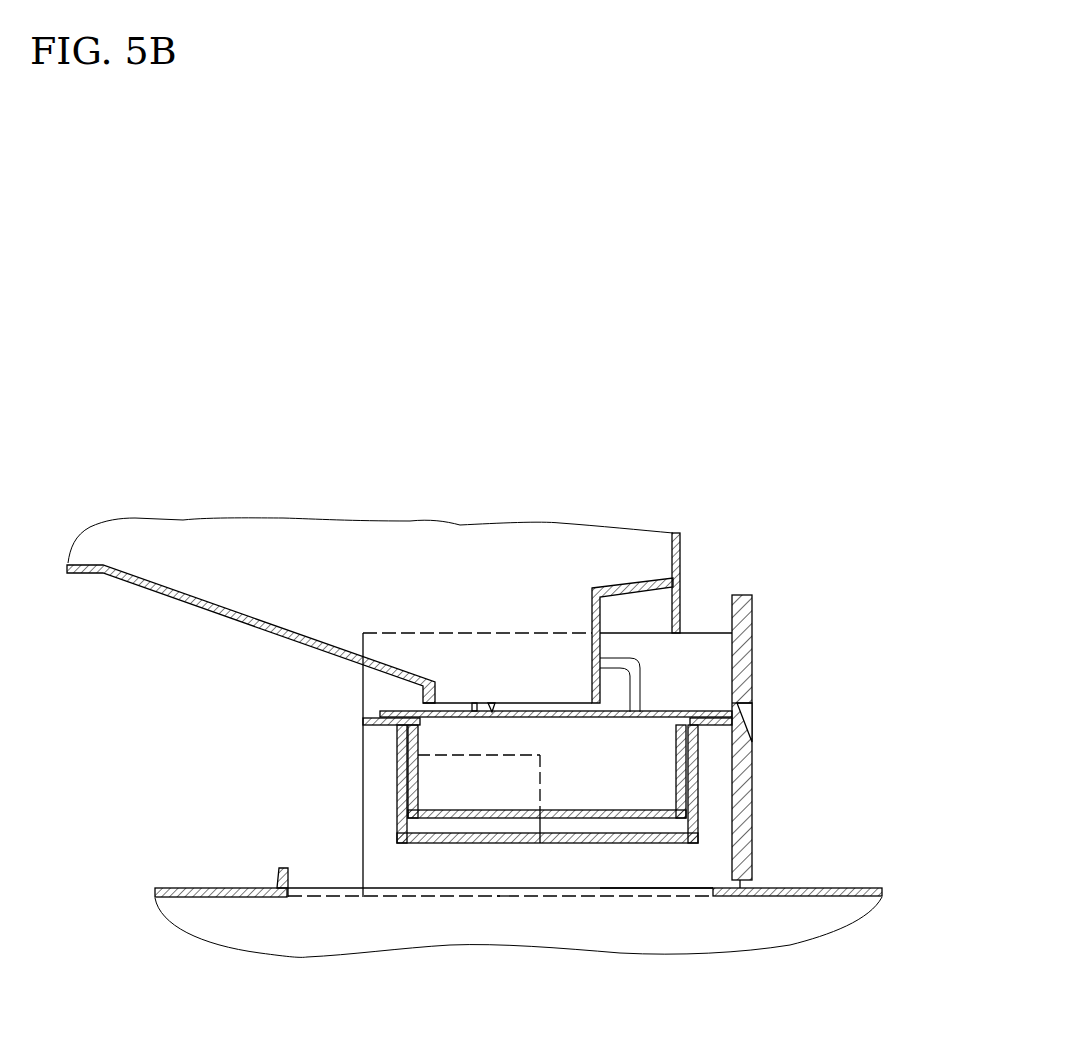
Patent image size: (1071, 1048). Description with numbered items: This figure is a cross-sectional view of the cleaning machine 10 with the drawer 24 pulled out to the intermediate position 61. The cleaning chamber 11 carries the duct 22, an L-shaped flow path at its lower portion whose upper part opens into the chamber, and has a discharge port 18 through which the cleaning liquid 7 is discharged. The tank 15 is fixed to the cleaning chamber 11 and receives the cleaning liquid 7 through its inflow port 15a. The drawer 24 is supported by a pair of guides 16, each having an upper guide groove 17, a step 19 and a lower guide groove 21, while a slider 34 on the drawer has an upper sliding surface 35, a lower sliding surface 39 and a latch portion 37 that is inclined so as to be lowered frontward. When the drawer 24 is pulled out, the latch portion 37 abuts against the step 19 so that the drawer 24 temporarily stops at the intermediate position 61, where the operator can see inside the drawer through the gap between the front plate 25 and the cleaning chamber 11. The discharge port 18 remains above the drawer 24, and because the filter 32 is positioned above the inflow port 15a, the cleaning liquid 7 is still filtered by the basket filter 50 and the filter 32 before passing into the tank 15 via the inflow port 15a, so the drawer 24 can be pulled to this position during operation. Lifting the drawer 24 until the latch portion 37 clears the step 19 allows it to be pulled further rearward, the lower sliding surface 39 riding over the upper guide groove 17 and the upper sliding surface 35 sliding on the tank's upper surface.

The cleaning liquid 7 is at (448, 672).
The cleaning machine 10 is at (936, 459).
The cleaning chamber 11 is at (678, 553).
The tank 15 is at (210, 888).
The inflow port 15a is at (290, 897).
The guide 16 is at (310, 864).
The upper guide groove 17 is at (640, 873).
The discharge port 18 is at (490, 702).
The step 19 is at (500, 887).
The lower guide groove 21 is at (353, 898).
The duct 22 is at (297, 632).
The drawer 24 is at (842, 729).
The front plate 25 is at (753, 683).
The filter 32 is at (397, 800).
The slider 34 is at (418, 903).
The upper sliding surface 35 is at (682, 897).
The latch portion 37 is at (506, 889).
The lower sliding surface 39 is at (394, 944).
The basket filter 50 is at (400, 712).
The intermediate position 61 is at (842, 729).